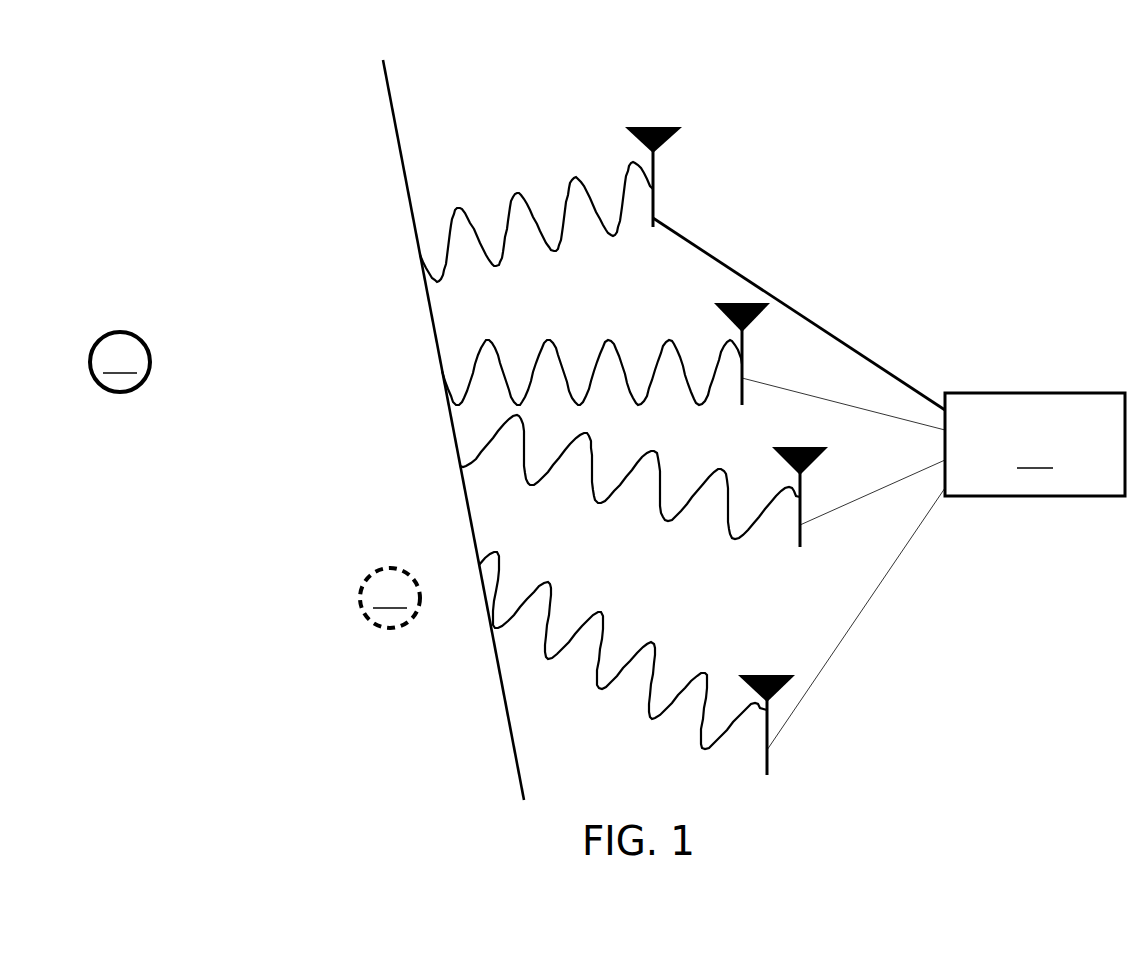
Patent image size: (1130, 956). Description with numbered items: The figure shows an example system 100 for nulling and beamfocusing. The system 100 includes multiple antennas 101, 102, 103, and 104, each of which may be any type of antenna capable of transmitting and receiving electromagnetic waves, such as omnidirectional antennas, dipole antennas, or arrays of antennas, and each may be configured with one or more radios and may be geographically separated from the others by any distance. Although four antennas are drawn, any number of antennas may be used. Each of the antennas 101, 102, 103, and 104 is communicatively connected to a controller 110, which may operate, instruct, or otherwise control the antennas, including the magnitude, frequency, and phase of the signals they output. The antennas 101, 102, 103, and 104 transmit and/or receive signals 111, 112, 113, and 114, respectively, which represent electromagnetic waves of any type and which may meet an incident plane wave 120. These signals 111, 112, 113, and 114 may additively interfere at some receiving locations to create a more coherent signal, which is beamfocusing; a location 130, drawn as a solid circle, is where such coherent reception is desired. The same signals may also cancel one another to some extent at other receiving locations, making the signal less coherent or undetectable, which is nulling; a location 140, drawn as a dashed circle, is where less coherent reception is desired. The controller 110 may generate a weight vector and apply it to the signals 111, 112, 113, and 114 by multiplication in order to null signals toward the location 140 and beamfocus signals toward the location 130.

The system 100 is at (1013, 103).
The antenna 101 is at (668, 141).
The antenna 102 is at (723, 320).
The antenna 103 is at (823, 457).
The antenna 104 is at (782, 690).
The controller 110 is at (1035, 444).
The signal 111 is at (515, 190).
The signal 112 is at (552, 342).
The signal 113 is at (660, 448).
The signal 114 is at (600, 612).
The incident plane wave 120 is at (392, 112).
The location 130 is at (120, 362).
The location 140 is at (390, 598).